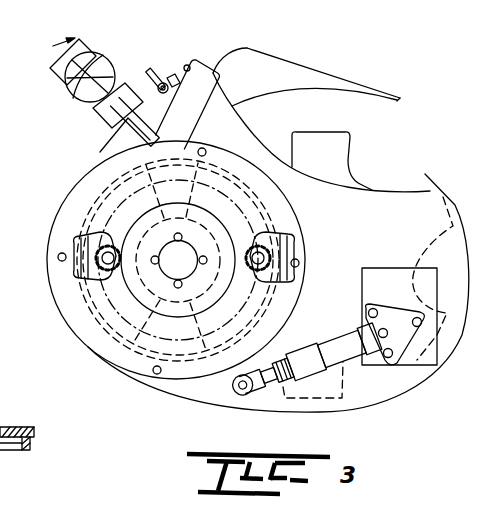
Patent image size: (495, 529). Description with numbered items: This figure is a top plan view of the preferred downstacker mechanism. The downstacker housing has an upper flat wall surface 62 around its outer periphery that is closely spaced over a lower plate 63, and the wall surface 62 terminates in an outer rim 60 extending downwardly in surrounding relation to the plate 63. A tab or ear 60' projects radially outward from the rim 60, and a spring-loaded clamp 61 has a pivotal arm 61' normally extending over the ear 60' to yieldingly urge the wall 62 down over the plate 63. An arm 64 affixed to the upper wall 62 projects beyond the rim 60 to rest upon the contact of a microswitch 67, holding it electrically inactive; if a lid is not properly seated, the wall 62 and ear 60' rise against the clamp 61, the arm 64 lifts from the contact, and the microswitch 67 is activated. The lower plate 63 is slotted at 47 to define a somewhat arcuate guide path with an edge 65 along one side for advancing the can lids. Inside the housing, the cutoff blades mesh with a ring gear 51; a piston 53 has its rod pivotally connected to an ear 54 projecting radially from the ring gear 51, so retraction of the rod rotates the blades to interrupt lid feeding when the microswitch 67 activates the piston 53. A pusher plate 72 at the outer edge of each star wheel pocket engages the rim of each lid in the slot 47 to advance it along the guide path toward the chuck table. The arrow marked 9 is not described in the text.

The direction arrow 9 is at (53, 46).
The guide slot 47 is at (320, 115).
The ring gear 51 is at (112, 343).
The piston 53 is at (333, 347).
The ear 54 is at (232, 383).
The rim 60 is at (250, 242).
The tab or ear 60' is at (237, 66).
The spring-loaded clamp 61 is at (156, 71).
The pivotal arm 61' is at (188, 104).
The upper flat wall surface 62 is at (107, 150).
The lower plate 63 is at (386, 98).
The arm 64 is at (110, 132).
The edge 65 is at (270, 97).
The microswitch 67 is at (63, 88).
The pusher plate 72 is at (3, 427).